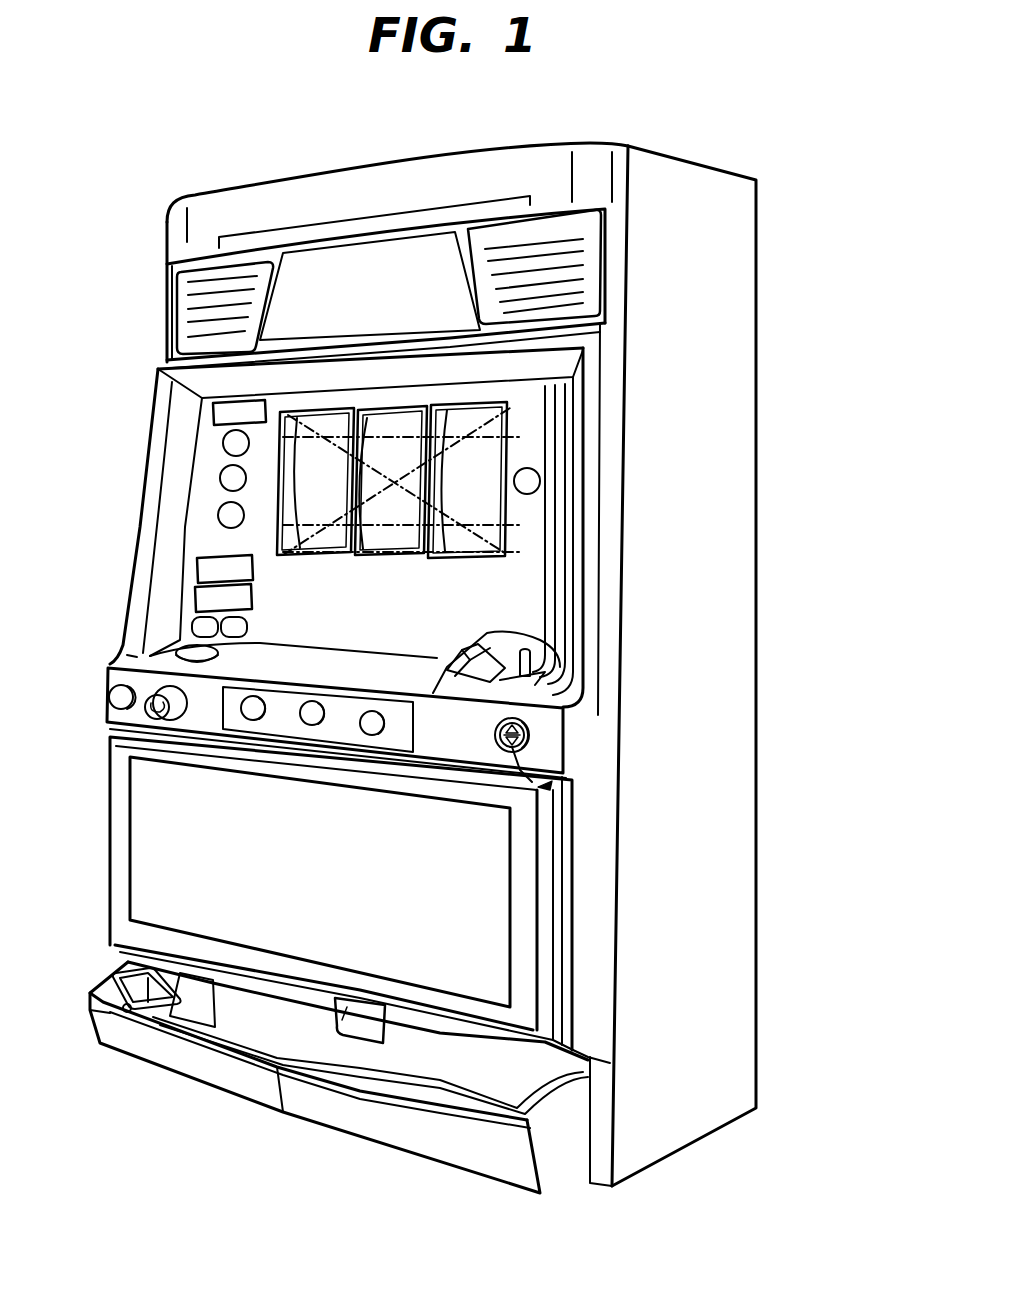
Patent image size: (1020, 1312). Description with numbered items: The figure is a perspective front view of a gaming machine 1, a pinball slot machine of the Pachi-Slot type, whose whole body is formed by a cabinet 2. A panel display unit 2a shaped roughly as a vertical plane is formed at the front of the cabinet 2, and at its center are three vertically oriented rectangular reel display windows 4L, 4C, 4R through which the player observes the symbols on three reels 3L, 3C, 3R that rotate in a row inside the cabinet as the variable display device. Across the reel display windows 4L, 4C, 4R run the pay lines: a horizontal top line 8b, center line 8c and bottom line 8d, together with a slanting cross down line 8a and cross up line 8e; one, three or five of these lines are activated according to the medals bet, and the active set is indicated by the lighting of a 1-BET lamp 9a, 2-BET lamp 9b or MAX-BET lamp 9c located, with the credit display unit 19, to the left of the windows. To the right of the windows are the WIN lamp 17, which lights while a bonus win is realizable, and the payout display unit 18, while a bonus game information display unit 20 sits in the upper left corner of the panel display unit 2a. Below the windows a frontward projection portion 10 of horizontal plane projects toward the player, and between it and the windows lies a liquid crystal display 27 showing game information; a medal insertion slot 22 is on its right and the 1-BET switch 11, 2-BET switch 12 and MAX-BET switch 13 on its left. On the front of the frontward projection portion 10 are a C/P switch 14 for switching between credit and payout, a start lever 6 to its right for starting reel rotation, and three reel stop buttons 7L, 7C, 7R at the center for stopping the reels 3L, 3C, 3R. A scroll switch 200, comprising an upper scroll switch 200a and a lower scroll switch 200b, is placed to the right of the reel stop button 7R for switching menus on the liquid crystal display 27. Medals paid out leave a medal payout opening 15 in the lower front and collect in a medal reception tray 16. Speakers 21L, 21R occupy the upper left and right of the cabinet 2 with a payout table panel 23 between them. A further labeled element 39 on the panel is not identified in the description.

The gaming machine 1 is at (732, 256).
The cabinet 2 is at (152, 530).
The panel display unit 2a is at (578, 360).
The left reel 3L is at (344, 420).
The center reel 3C is at (421, 422).
The right reel 3R is at (488, 418).
The left reel display window 4L is at (323, 418).
The center reel display window 4C is at (398, 423).
The right reel display window 4R is at (463, 417).
The start lever 6 is at (175, 652).
The left reel stop button 7L is at (253, 720).
The center reel stop button 7C is at (311, 725).
The right reel stop button 7R is at (372, 735).
The cross down line 8a is at (495, 555).
The top line 8b is at (520, 437).
The center line 8c is at (520, 525).
The bottom line 8d is at (520, 552).
The cross up line 8e is at (512, 406).
The 1-BET lamp 9a is at (218, 515).
The 2-BET lamp 9b is at (220, 478).
The MAX-BET lamp 9c is at (222, 443).
The frontward projection portion 10 is at (150, 655).
The 1-BET switch 11 is at (192, 625).
The 2-BET switch 12 is at (248, 628).
The MAX-BET switch 13 is at (150, 708).
The C/P switch 14 is at (116, 697).
The medal payout opening 15 is at (363, 1018).
The medal reception tray 16 is at (233, 1055).
The WIN lamp 17 is at (540, 481).
The payout display unit 18 is at (207, 570).
The credit display unit 19 is at (196, 598).
The bonus game information display unit 20 is at (220, 414).
The left speaker 21L is at (207, 270).
The right speaker 21R is at (550, 228).
The medal insertion slot 22 is at (540, 636).
The payout table panel 23 is at (300, 263).
The liquid crystal display 27 is at (352, 628).
The panel frame edge 39 is at (212, 540).
The scroll switch 200 is at (531, 740).
The upper scroll switch 200a is at (531, 732).
The lower scroll switch 200b is at (550, 784).